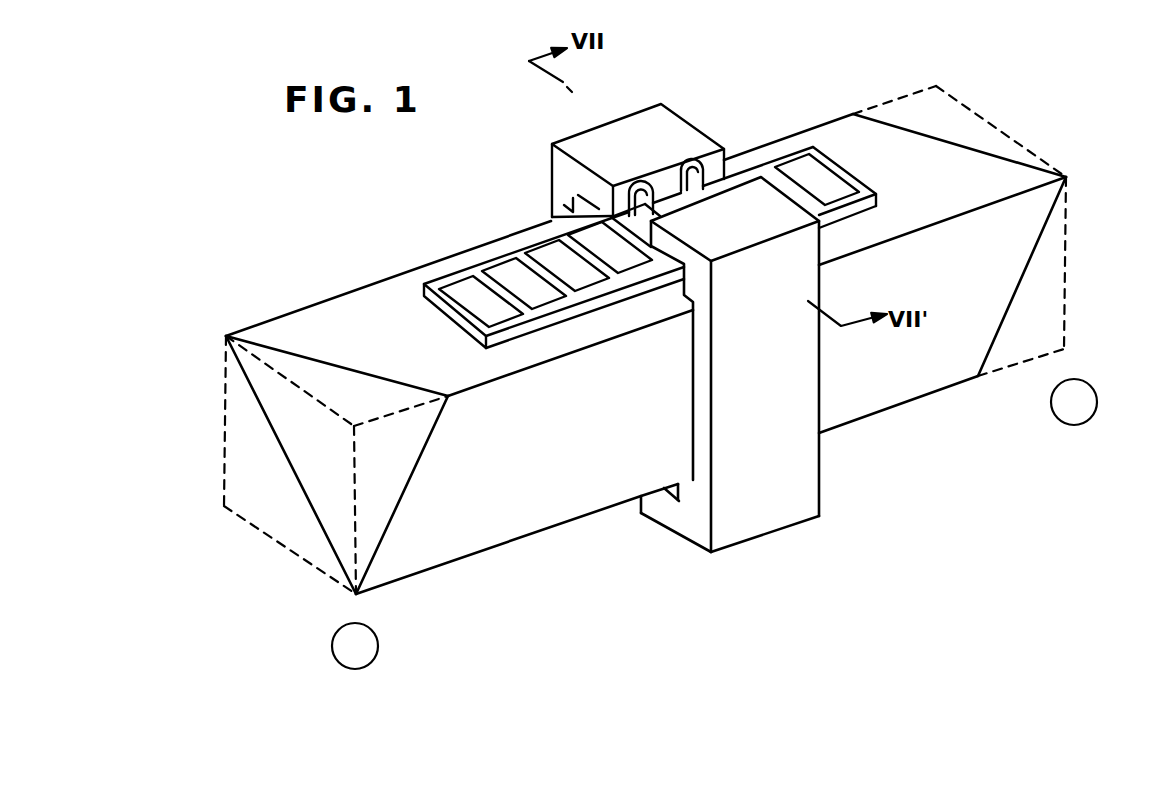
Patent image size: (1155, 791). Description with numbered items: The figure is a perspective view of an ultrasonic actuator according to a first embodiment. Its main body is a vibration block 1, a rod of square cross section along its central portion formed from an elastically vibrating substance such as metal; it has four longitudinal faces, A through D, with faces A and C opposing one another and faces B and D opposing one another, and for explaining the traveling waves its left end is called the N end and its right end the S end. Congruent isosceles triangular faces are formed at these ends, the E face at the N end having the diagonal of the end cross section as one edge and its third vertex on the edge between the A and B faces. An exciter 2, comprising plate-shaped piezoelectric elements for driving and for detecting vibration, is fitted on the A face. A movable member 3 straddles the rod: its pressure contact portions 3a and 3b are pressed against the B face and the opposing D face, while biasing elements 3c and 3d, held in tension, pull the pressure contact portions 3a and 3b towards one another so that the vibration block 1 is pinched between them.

The vibration block 1 is at (888, 397).
The exciter 2 is at (470, 270).
The movable member 3 is at (761, 388).
The pressure contact portion 3a is at (780, 505).
The pressure contact portion 3b is at (640, 137).
The biasing element 3c is at (645, 197).
The biasing element 3d is at (697, 187).